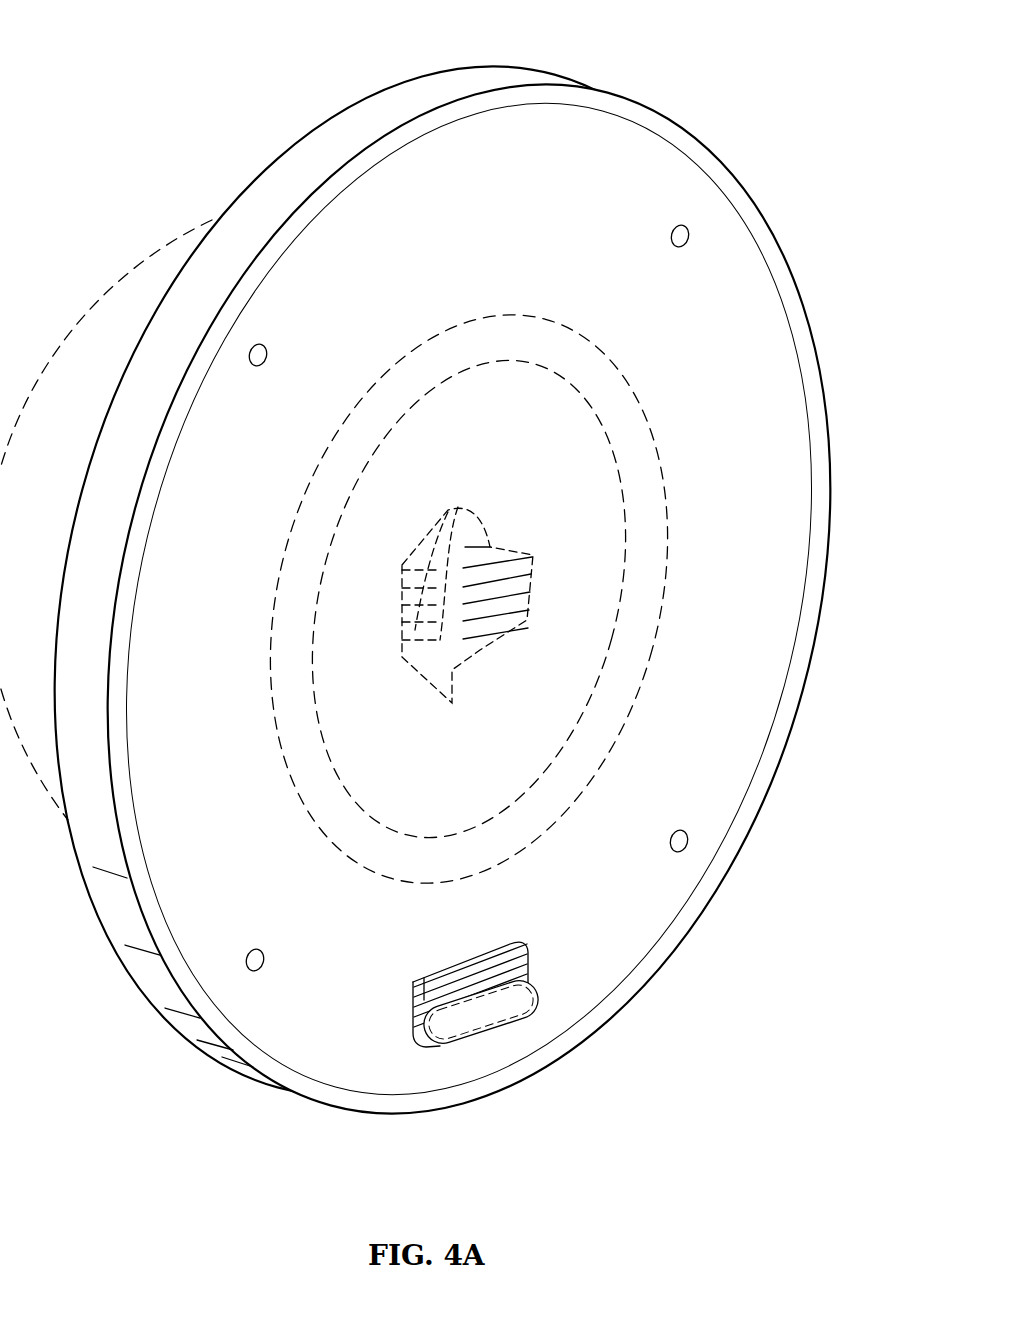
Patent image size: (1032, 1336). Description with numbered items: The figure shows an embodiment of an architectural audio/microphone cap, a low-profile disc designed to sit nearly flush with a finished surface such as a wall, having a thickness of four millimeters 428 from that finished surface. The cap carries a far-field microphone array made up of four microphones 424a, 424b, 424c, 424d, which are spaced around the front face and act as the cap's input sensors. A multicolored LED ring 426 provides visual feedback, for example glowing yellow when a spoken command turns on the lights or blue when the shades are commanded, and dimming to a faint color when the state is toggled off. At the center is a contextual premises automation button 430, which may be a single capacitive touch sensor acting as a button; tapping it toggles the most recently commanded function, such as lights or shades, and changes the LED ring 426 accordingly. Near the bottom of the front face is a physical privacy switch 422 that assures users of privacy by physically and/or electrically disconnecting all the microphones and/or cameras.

The thickness of 4 mm 428 is at (517, 68).
The multicolored LED ring 426 is at (443, 352).
The microphone 424a is at (690, 232).
The microphone 424b is at (688, 843).
The microphone 424c is at (263, 966).
The microphone 424d is at (257, 342).
The contextual premises automation button 430 is at (502, 522).
The privacy switch 422 is at (490, 1036).